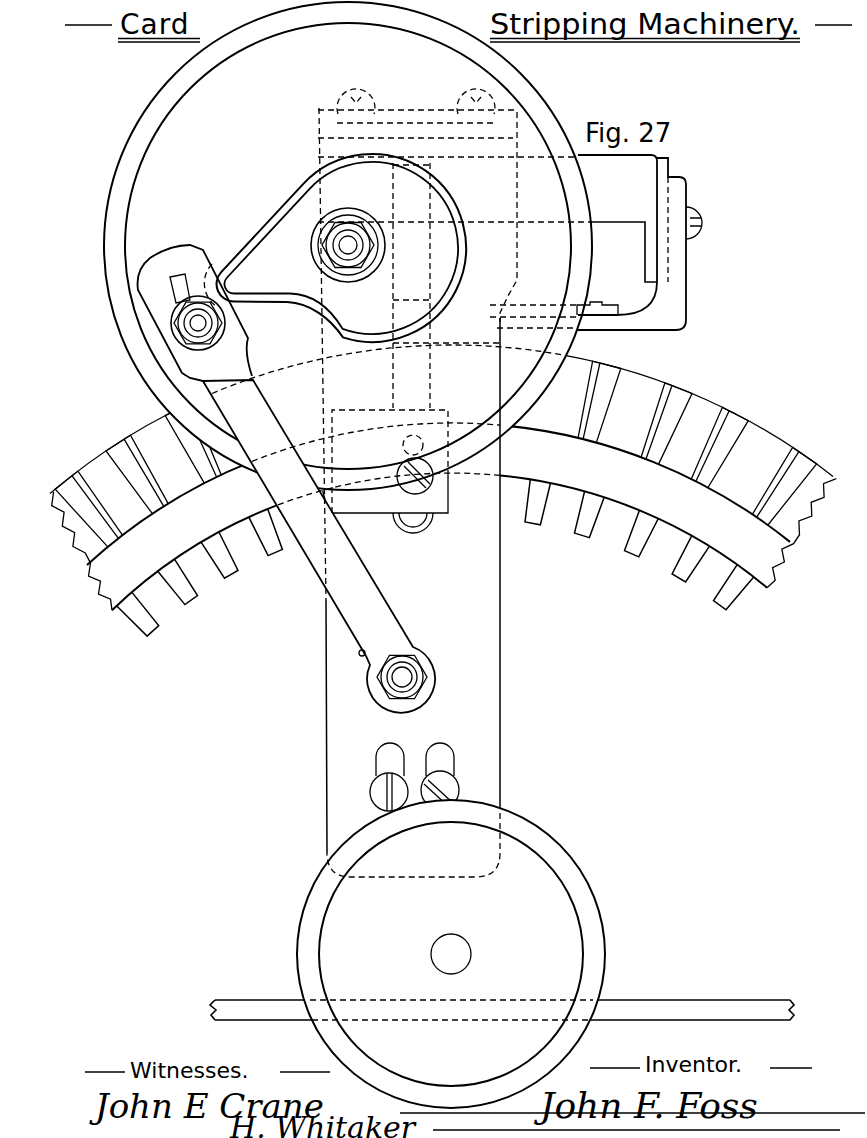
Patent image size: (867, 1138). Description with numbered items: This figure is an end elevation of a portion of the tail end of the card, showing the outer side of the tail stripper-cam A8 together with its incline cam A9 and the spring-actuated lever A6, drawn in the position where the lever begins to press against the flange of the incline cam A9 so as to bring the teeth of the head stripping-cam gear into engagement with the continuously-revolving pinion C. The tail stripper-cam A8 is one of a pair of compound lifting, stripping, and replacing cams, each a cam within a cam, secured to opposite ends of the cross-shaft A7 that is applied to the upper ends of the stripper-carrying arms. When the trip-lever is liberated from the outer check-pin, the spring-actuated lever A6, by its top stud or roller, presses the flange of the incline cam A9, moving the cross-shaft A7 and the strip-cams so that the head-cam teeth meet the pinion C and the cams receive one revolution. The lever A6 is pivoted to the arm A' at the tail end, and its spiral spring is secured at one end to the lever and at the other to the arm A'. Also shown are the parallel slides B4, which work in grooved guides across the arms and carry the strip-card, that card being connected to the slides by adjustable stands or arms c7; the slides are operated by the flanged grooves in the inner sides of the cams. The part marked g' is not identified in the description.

The tail stripper-cam A8 is at (247, 132).
The incline cam A9 is at (292, 249).
The cross-shaft A7 is at (348, 245).
The pinion C is at (198, 323).
The parallel slides B4 is at (596, 242).
The adjustable stands or arms c7 is at (625, 309).
The screw head g' is at (416, 103).
The spring-actuated lever A6 is at (346, 593).
The arm A' is at (455, 480).